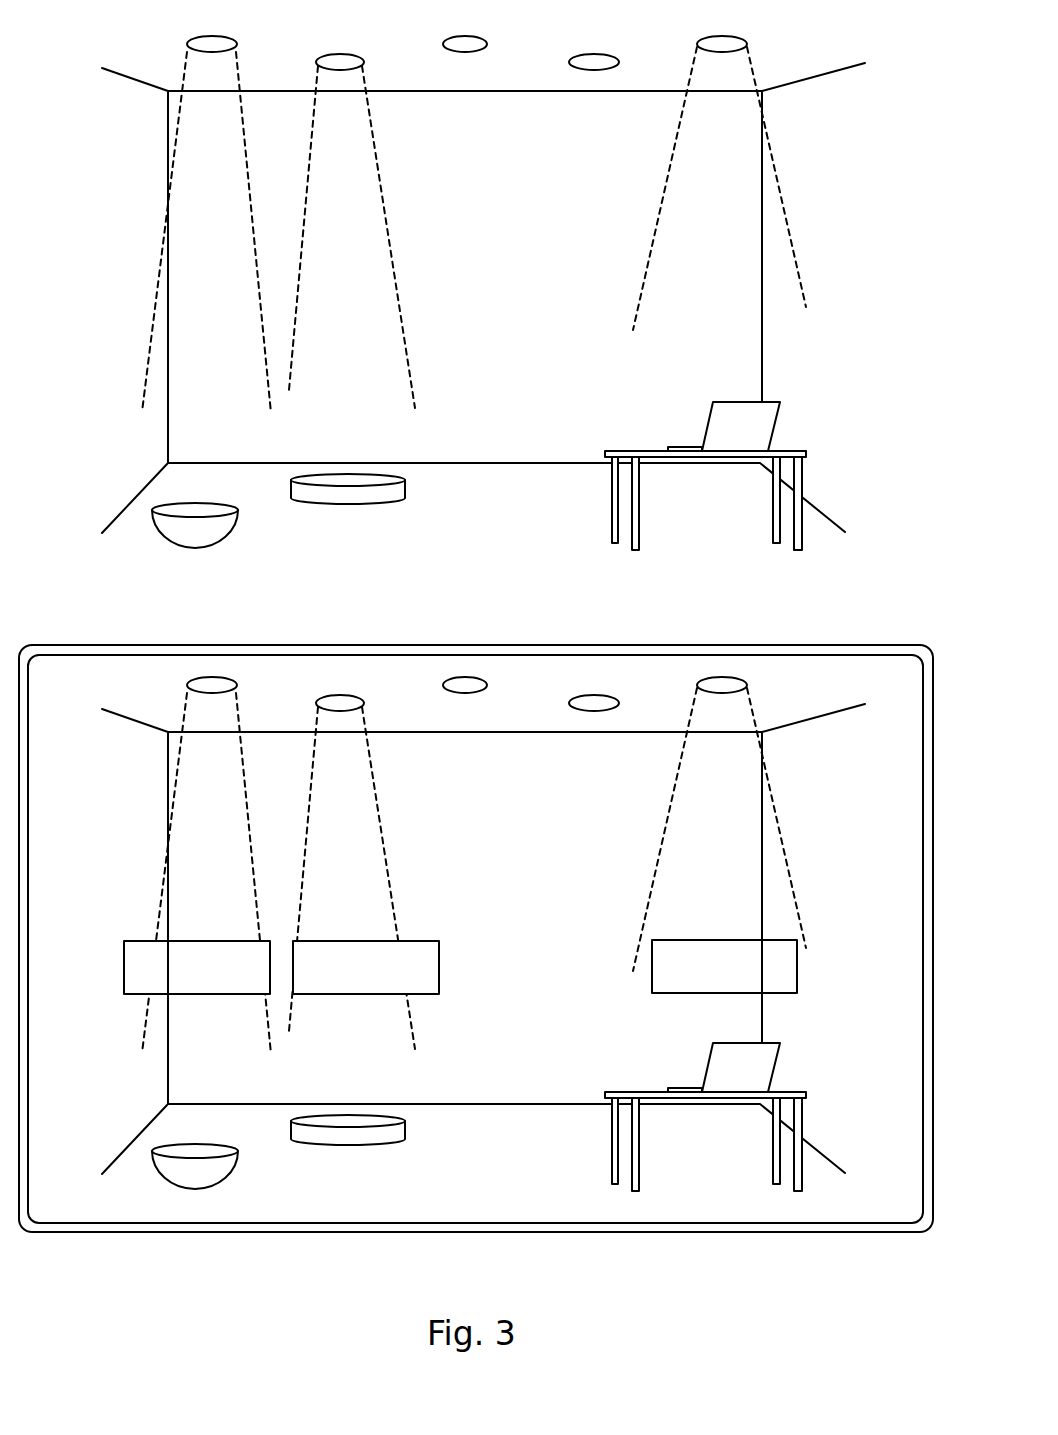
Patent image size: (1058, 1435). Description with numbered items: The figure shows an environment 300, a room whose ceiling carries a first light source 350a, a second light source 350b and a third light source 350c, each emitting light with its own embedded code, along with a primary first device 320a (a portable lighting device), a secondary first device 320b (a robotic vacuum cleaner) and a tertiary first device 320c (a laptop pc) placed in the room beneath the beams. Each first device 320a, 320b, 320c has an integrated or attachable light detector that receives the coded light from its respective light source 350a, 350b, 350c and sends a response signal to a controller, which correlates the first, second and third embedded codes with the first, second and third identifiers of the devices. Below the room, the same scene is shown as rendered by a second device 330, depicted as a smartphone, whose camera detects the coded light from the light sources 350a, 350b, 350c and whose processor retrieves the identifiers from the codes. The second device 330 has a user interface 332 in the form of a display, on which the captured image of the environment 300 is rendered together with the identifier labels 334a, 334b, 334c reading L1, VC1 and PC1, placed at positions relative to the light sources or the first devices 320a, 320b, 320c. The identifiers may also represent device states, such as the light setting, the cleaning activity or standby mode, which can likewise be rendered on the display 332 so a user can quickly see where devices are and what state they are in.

The environment 300 is at (526, 592).
The primary first device 320a is at (212, 532).
The secondary first device 320b is at (392, 495).
The tertiary first device 320c is at (760, 421).
The second device 330 is at (195, 1232).
The user interface 332 is at (77, 1210).
The device label L1 334a is at (142, 962).
The device label VC1 334b is at (413, 950).
The device label PC1 334c is at (670, 986).
The first light source 350a is at (210, 47).
The second light source 350b is at (340, 63).
The third light source 350c is at (722, 45).